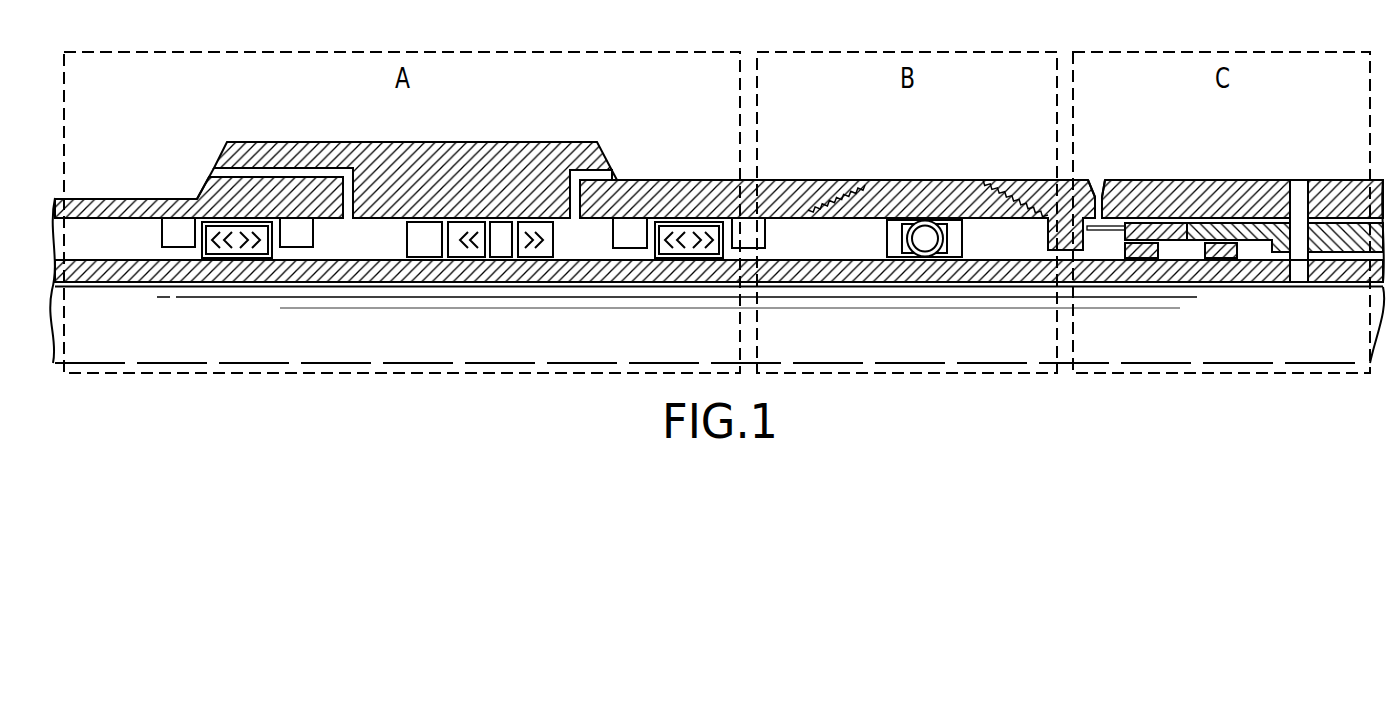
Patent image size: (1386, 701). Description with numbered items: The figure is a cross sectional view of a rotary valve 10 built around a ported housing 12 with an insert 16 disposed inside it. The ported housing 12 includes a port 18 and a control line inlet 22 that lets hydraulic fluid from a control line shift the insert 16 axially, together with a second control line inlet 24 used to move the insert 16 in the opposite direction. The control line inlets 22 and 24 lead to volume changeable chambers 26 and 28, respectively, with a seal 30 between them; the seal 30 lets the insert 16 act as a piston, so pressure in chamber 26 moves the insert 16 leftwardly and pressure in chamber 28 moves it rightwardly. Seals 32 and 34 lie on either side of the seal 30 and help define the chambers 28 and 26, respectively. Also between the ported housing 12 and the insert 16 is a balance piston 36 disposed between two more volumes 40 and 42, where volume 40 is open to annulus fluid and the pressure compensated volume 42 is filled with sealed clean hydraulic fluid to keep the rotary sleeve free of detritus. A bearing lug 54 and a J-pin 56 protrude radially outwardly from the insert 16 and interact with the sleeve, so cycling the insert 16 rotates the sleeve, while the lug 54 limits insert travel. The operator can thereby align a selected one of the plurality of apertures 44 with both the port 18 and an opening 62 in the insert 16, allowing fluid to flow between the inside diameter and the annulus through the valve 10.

The rotary valve 10 is at (1092, 140).
The ported housing 12 is at (1210, 192).
The insert 16 is at (598, 272).
The port 18 is at (1298, 197).
The control line inlet 22 is at (617, 178).
The second control line inlet 24 is at (210, 177).
The volume changeable chamber 26 is at (587, 237).
The volume changeable chamber 28 is at (378, 237).
The seal 30 is at (500, 223).
The seal 32 is at (240, 242).
The seal 34 is at (683, 240).
The balance piston 36 is at (922, 245).
The volume 40 is at (795, 233).
The pressure compensated volume 42 is at (1003, 238).
The apertures 44 is at (1298, 237).
The bearing lug 54 is at (1143, 250).
The J-pin 56 is at (1223, 253).
The opening 62 is at (1298, 273).